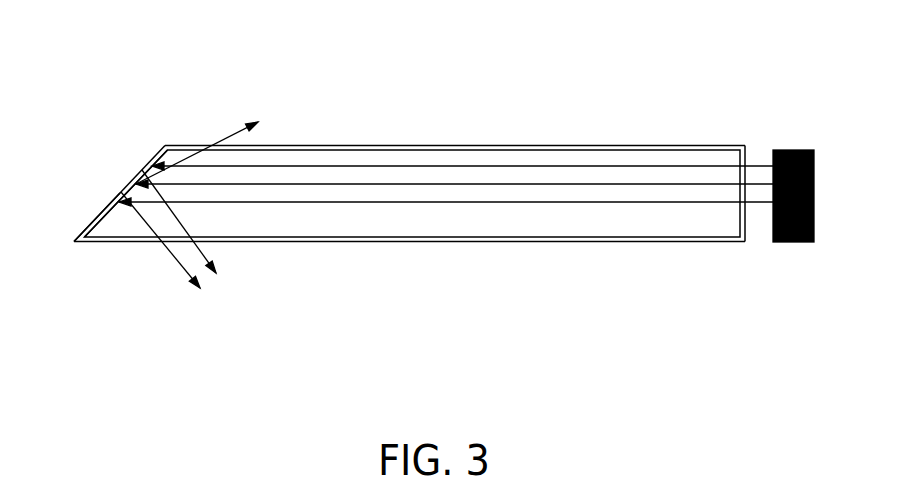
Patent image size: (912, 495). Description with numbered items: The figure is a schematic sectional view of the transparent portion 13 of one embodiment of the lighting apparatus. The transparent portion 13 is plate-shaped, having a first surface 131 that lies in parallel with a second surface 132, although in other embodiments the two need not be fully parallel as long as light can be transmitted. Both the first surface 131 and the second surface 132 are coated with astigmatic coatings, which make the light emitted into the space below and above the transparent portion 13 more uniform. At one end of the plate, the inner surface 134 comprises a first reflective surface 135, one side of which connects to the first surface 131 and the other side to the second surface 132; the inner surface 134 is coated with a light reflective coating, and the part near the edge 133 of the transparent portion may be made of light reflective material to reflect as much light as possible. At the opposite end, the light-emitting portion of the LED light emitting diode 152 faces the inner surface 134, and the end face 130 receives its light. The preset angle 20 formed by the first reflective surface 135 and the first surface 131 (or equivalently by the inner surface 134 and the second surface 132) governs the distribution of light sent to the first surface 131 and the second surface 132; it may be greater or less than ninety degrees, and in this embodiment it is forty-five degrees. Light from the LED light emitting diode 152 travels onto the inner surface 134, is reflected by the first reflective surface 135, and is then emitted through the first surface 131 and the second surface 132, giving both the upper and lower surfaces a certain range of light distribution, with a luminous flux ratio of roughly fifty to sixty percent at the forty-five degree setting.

The transparent portion 13 is at (420, 105).
The preset angle 20 is at (100, 227).
The light incident end face 130 is at (743, 222).
The first surface 131 is at (545, 242).
The second surface 132 is at (567, 147).
The edge 133 is at (128, 179).
The inner surface 134 is at (102, 211).
The first reflective surface 135 is at (145, 167).
The LED light emitting diode 152 is at (797, 149).